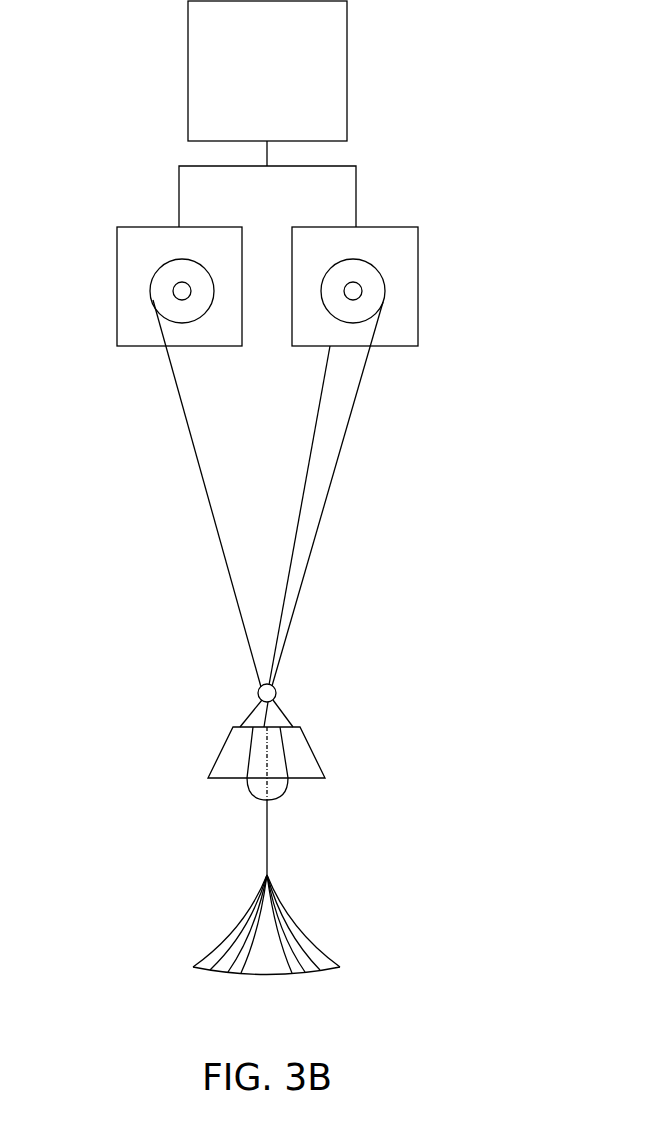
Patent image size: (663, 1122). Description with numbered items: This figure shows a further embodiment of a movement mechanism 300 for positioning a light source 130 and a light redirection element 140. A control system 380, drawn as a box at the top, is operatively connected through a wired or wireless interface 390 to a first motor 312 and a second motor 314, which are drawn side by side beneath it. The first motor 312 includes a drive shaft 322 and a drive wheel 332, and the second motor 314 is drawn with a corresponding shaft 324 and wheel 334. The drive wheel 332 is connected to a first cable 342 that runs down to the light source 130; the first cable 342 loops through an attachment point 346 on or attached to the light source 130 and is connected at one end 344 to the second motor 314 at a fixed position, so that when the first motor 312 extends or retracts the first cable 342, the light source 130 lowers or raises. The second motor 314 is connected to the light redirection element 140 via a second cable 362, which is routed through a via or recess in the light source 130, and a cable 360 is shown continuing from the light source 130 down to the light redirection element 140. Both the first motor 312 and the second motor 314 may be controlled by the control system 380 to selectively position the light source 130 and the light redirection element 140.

The movement mechanism 300 is at (442, 147).
The control system 380 is at (347, 68).
The wired or wireless interface 390 is at (179, 197).
The first motor 312 is at (117, 305).
The second motor 314 is at (418, 312).
The drive wheel 332 is at (163, 262).
The second lens 334 is at (383, 260).
The drive shaft 322 is at (173, 290).
The second light emitter 324 is at (362, 288).
The first cable 342 is at (207, 500).
The end of the first cable 344 is at (320, 347).
The second cable 362 is at (329, 498).
The attachment point 346 is at (258, 691).
The light source 130 is at (313, 748).
The second cable 360 is at (268, 835).
The light redirection element 140 is at (303, 917).